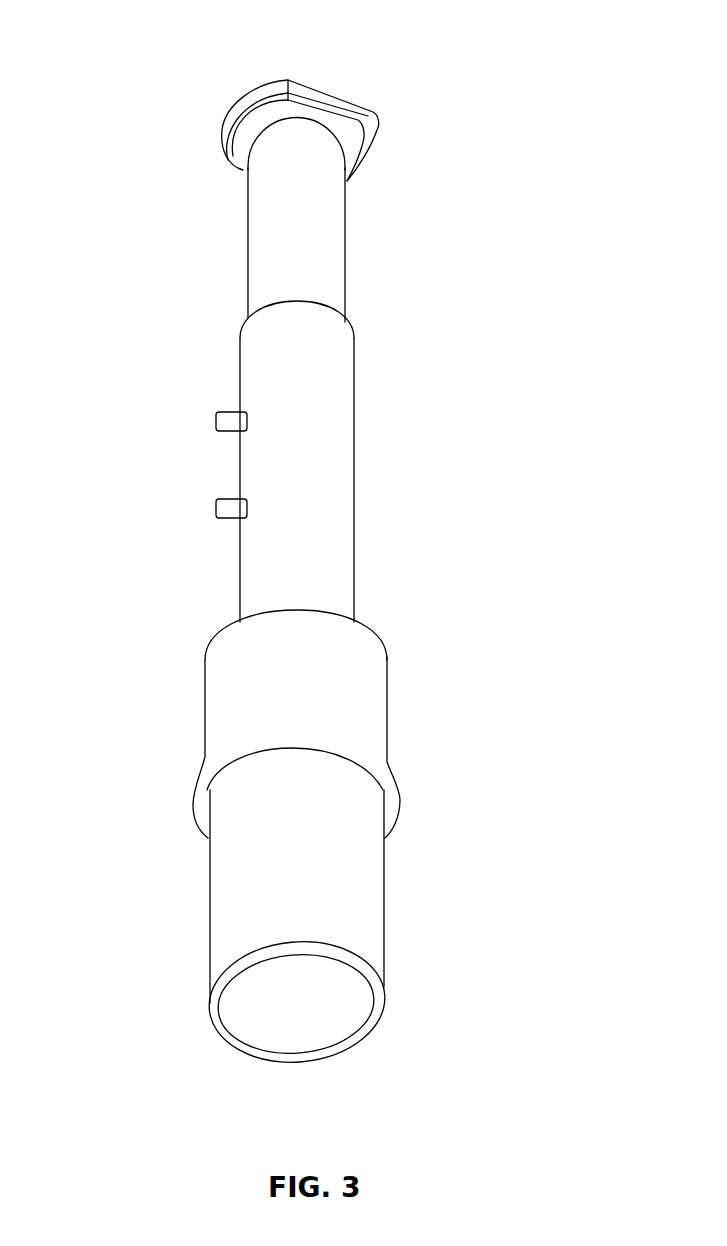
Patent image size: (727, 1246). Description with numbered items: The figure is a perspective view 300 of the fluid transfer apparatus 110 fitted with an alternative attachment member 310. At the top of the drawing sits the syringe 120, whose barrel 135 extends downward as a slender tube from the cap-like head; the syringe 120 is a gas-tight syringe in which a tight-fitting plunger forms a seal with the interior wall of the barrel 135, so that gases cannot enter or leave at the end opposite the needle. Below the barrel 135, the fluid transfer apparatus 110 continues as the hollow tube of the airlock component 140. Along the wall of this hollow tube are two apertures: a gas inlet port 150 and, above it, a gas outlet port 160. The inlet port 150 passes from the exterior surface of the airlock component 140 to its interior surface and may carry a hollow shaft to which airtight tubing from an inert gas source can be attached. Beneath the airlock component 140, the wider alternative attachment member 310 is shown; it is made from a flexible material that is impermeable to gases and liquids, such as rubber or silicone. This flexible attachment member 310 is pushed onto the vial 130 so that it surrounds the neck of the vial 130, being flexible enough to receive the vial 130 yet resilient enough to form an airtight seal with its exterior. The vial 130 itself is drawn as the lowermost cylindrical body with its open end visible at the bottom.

The perspective view 300 is at (386, 62).
The syringe 120 is at (203, 172).
The fluid transfer apparatus 110 is at (408, 378).
The barrel 135 is at (345, 236).
The airlock component 140 is at (355, 430).
The gas outlet port 160 is at (214, 421).
The gas inlet port 150 is at (214, 508).
The alternative attachment member 310 is at (384, 698).
The vial 130 is at (392, 900).